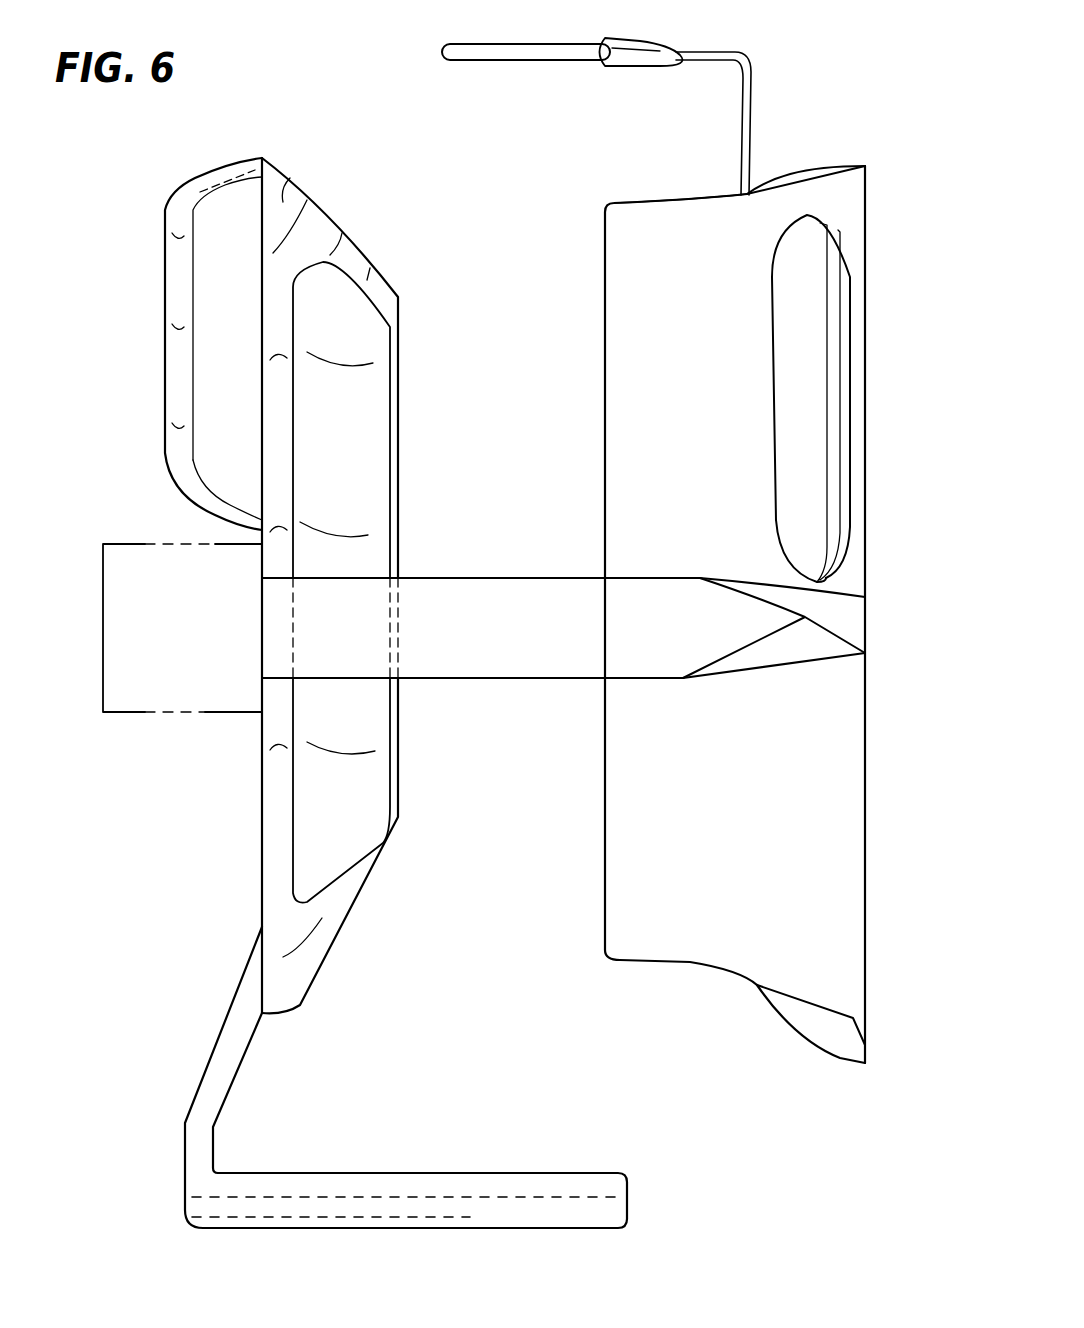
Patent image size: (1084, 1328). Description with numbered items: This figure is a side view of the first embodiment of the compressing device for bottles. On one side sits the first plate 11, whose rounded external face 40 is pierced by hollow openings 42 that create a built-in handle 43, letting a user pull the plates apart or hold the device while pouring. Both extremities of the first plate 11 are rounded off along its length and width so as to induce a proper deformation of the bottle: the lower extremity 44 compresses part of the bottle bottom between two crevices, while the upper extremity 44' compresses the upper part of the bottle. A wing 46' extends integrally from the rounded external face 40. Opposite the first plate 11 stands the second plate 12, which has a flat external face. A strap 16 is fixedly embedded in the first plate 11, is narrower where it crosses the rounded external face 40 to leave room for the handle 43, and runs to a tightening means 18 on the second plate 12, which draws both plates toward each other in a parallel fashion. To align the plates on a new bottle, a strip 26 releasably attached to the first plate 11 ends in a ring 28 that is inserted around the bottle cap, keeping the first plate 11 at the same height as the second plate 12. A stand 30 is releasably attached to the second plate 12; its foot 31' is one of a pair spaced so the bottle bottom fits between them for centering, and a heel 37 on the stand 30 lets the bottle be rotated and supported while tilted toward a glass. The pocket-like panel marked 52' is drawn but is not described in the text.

The first plate 11 is at (867, 197).
The second plate 12 is at (300, 150).
The strap 16 is at (453, 657).
The tightening means 18 is at (150, 658).
The strip 26 is at (758, 50).
The ring 28 is at (538, 60).
The stand 30 is at (206, 1060).
The foot 31' is at (409, 1154).
The heel 37 is at (190, 1222).
The rounded external face 40 is at (655, 400).
The hollow opening 42 is at (806, 437).
The built-in handle 43 is at (165, 350).
The lower extremity 44 is at (829, 1072).
The upper extremity 44' is at (806, 129).
The wing 46' is at (654, 160).
The pocket panel 52' is at (330, 582).